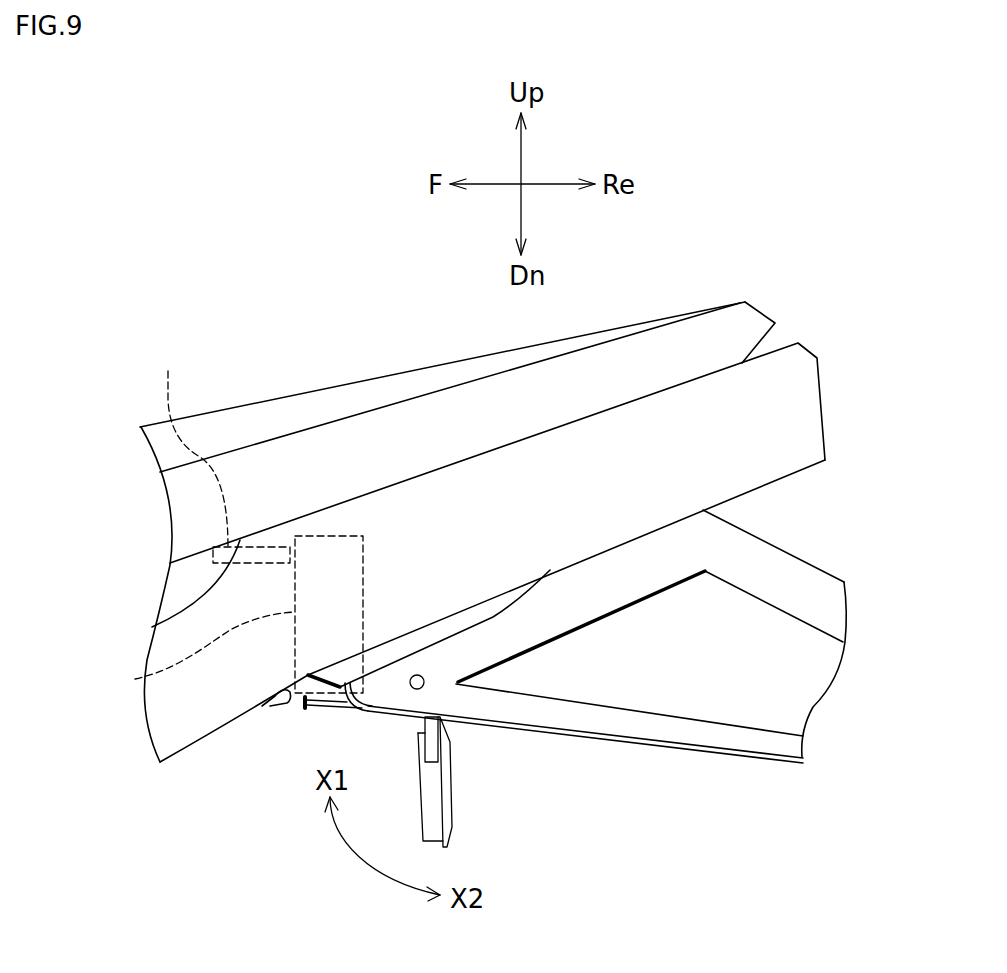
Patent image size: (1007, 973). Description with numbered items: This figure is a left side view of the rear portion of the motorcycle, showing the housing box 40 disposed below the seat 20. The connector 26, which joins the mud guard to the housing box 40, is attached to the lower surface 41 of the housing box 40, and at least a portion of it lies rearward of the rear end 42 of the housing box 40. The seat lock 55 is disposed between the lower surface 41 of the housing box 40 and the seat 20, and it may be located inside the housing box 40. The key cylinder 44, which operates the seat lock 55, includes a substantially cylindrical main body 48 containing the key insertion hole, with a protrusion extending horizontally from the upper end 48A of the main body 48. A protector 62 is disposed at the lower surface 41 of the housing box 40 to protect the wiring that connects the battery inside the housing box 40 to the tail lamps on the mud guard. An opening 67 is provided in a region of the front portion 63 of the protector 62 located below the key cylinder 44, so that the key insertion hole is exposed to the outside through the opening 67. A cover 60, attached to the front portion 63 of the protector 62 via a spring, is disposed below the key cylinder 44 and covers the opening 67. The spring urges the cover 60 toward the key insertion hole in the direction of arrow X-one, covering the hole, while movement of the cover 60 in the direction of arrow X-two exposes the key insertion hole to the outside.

The seat 20 is at (370, 380).
The connector 26 is at (723, 740).
The housing box 40 is at (807, 470).
The lower surface 41 is at (182, 749).
The rear end 42 is at (822, 387).
The key cylinder 44 is at (365, 618).
The main body 48 is at (135, 679).
The upper end 48A is at (318, 536).
The seat lock 55 is at (221, 453).
The cover 60 is at (455, 796).
The protector 62 is at (270, 708).
The front portion 63 is at (301, 707).
The opening 67 is at (311, 707).